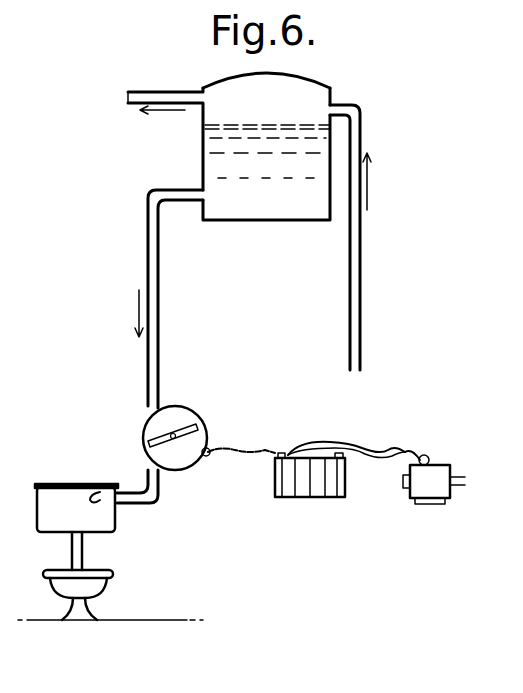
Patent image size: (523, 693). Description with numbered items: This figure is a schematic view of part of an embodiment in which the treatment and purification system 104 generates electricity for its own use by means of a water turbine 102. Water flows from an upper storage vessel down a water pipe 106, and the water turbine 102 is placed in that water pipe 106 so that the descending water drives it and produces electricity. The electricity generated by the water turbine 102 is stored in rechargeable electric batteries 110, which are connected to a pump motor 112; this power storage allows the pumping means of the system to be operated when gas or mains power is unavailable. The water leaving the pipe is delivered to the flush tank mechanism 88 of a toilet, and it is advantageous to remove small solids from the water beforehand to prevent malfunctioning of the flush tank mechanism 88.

The flush tank mechanism 88 is at (95, 495).
The water turbine 102 is at (208, 432).
The treatment and purification system 104 is at (120, 388).
The water pipe 106 is at (310, 97).
The rechargeable electric batteries 110 is at (326, 487).
The pump motor 112 is at (433, 490).